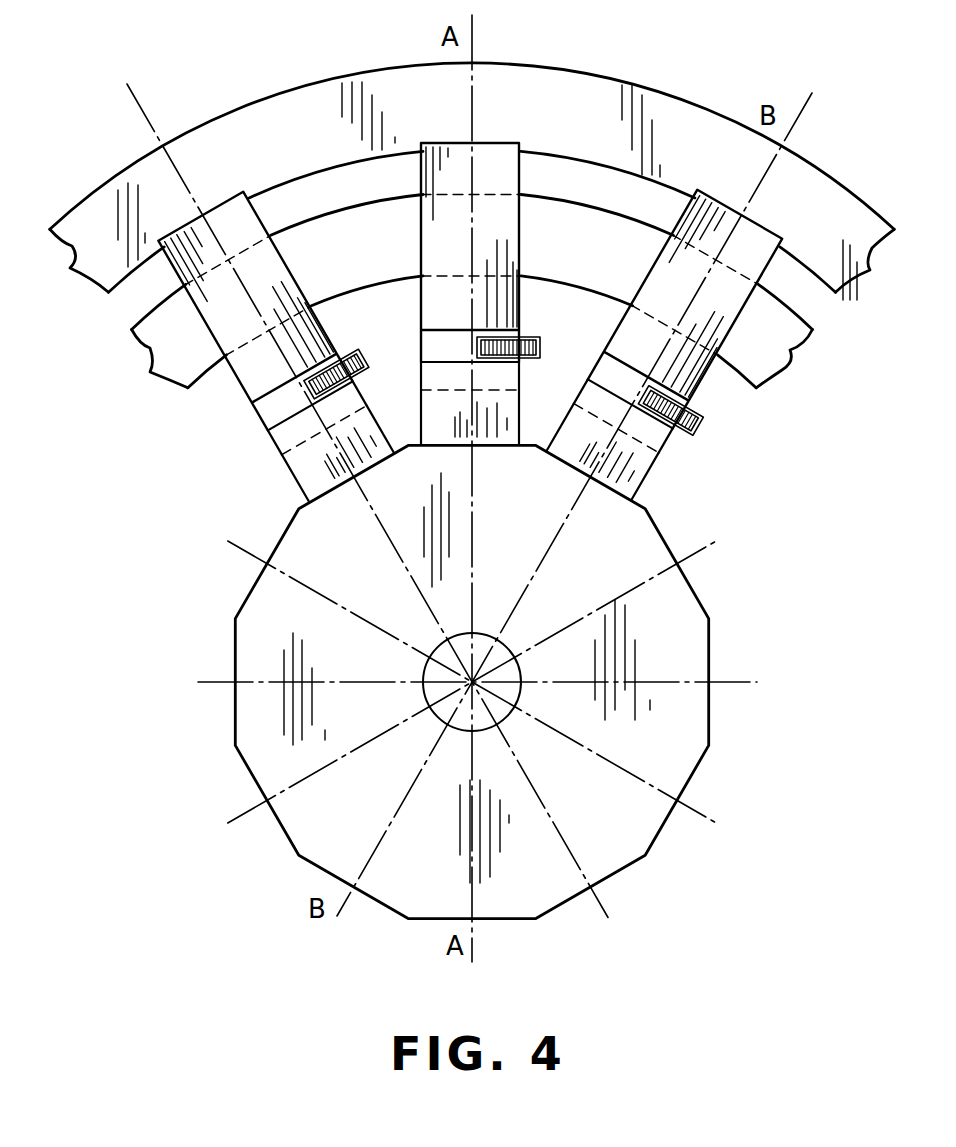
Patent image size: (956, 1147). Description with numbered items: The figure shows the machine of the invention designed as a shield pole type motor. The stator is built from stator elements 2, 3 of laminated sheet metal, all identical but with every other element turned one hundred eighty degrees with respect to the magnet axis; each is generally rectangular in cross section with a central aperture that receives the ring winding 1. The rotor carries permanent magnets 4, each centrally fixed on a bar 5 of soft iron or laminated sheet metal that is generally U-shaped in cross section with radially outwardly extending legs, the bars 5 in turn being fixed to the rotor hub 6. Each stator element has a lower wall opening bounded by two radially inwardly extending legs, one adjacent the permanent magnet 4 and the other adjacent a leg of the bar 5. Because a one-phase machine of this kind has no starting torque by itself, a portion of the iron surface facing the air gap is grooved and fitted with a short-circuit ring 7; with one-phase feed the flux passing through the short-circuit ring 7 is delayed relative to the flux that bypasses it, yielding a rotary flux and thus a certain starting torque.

The ring winding 1 is at (782, 340).
The stator element 2 is at (500, 160).
The stator element 3 is at (233, 205).
The permanent magnet 4 is at (283, 443).
The bar 5 is at (313, 470).
The rotor hub 6 is at (700, 652).
The short-circuit ring 7 is at (542, 347).